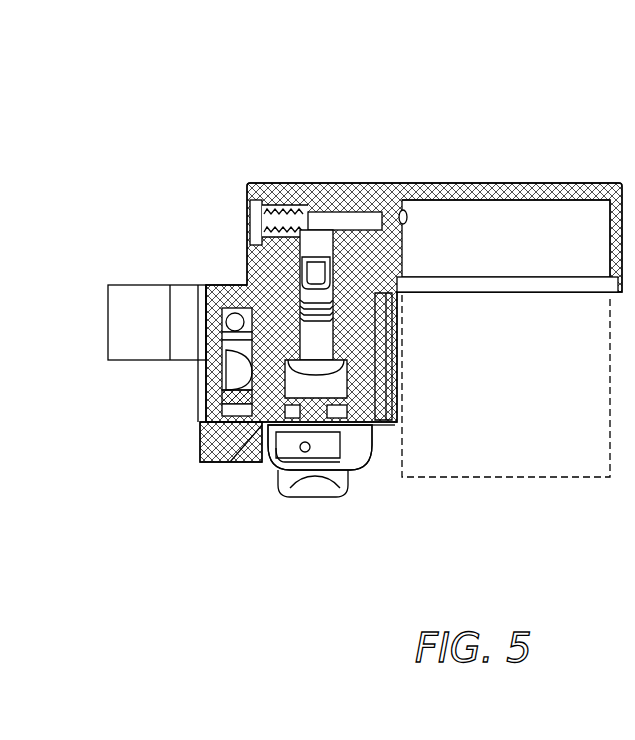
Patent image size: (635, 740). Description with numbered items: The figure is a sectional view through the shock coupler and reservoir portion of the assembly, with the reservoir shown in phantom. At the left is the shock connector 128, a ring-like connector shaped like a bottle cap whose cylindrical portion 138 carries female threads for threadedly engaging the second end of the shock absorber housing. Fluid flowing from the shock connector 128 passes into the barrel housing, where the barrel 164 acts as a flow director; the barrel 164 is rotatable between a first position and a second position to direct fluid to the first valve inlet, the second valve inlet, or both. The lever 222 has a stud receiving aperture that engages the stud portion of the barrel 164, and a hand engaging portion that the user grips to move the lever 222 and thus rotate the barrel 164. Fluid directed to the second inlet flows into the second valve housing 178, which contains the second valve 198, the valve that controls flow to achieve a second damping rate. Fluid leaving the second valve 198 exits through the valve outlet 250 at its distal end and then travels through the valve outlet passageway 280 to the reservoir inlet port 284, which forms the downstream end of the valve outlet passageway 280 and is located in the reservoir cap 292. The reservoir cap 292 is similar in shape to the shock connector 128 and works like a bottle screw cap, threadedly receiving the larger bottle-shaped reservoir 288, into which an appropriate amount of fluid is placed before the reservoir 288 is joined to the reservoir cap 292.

The shock connector 128 is at (131, 286).
The cylindrical portion 138 is at (128, 318).
The barrel 164 is at (240, 338).
The second valve housing 178 is at (370, 393).
The second valve 198 is at (310, 496).
The lever 222 is at (208, 458).
The valve outlet 250 is at (300, 262).
The valve outlet passageway 280 is at (330, 214).
The reservoir inlet port 284 is at (408, 212).
The reservoir 288 is at (549, 479).
The reservoir cap 292 is at (530, 160).